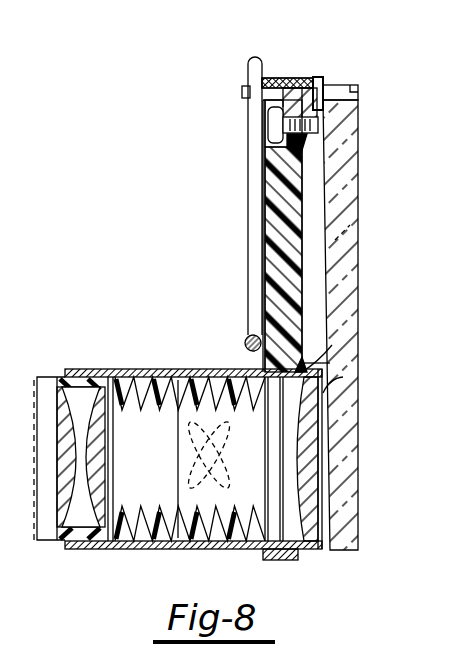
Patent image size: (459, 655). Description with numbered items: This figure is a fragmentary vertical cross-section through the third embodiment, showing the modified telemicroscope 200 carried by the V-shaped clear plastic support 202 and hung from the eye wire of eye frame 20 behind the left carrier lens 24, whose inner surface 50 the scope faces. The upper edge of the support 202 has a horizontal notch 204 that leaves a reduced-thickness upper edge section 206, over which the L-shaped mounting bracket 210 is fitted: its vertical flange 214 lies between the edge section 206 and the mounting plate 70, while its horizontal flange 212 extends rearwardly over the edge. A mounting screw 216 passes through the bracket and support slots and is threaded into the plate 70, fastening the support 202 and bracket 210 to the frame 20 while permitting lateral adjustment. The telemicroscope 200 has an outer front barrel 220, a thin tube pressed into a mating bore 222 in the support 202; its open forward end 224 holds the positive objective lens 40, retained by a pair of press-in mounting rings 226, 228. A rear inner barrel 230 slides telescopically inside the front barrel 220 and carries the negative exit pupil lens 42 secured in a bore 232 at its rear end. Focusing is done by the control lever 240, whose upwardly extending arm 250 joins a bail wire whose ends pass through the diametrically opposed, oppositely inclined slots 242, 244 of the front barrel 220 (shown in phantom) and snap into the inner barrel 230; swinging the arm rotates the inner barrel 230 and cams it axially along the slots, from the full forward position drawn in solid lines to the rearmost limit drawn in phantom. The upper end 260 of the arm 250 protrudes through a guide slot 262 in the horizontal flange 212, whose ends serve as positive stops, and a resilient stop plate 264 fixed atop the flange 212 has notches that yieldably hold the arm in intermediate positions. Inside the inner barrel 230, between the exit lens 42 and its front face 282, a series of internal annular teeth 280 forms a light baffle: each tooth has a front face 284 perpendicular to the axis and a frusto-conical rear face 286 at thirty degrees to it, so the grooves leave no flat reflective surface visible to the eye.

The eye wire 20 is at (358, 96).
The left hand lens 24 is at (353, 192).
The positive objective lens 40 is at (311, 456).
The negative exit pupil lens 42 is at (76, 456).
The inner surface 50 is at (332, 241).
The mounting plate 70 is at (331, 86).
The telemicroscope 200 is at (193, 360).
The support 202 is at (312, 270).
The horizontal notch 204 is at (265, 150).
The upper edge section 206 is at (300, 96).
The mounting bracket 210 is at (240, 102).
The horizontal flange 212 is at (288, 79).
The vertical flange 214 is at (306, 141).
The mounting screw 216 is at (268, 126).
The front barrel 220 is at (216, 360).
The bore 222 is at (238, 551).
The forward end 224 is at (330, 386).
The press-in mounting ring 226 is at (304, 371).
The press-in mounting ring 228 is at (330, 363).
The rear inner barrel 230 is at (38, 552).
The bore 232 is at (96, 372).
The control lever 240 is at (255, 218).
The slot 242 is at (195, 474).
The slot 244 is at (195, 447).
The arm 250 is at (262, 190).
The upper end 260 is at (254, 58).
The guide slot 262 is at (246, 90).
The stop plate 264 is at (313, 79).
The internal annular teeth 280 is at (126, 521).
The front face 282 is at (290, 561).
The front face 284 is at (168, 372).
The rear face 286 is at (84, 392).